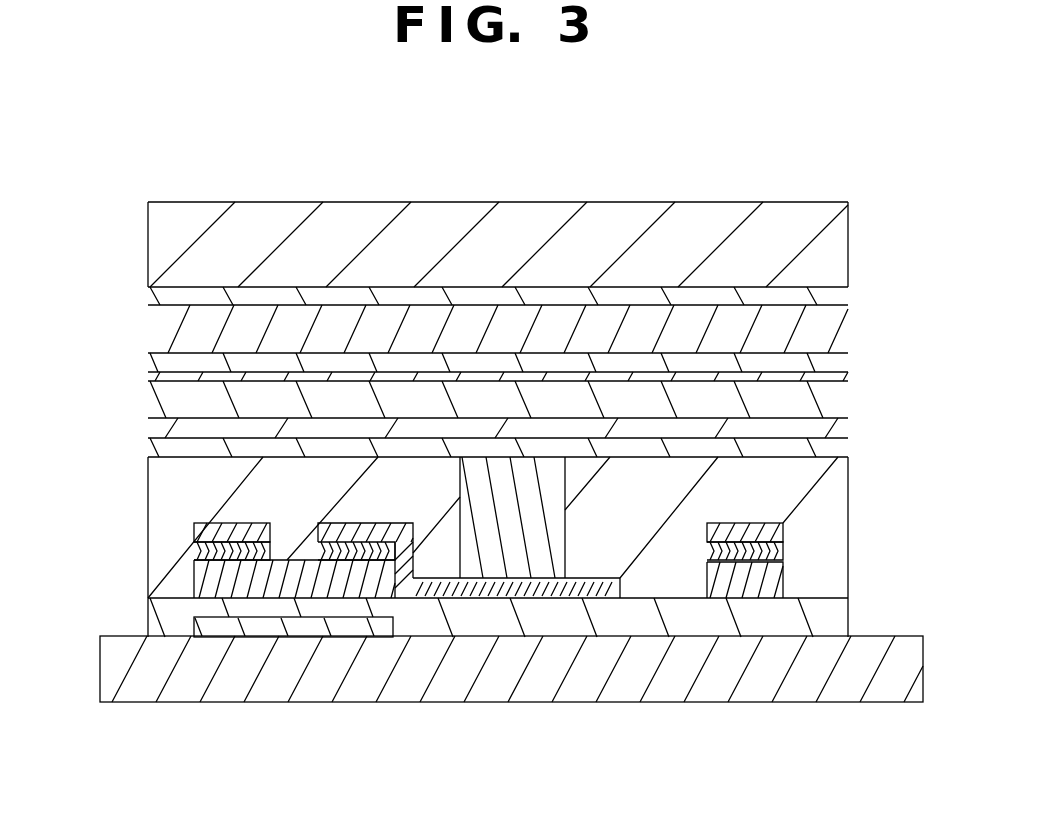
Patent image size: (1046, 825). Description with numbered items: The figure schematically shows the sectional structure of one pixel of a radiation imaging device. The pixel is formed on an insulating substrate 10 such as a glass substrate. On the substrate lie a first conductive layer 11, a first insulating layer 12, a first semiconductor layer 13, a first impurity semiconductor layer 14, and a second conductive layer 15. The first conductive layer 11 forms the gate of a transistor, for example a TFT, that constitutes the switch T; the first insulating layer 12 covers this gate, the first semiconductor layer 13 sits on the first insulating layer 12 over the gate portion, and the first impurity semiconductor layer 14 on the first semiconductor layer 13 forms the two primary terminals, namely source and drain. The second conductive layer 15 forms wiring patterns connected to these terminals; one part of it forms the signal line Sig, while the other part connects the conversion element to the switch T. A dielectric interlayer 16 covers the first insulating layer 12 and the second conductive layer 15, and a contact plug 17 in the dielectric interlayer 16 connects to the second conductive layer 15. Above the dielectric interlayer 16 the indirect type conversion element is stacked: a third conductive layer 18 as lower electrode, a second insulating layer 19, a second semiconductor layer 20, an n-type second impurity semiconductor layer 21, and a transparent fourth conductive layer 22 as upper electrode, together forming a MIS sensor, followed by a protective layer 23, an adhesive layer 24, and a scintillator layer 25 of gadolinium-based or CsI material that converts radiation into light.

The insulating substrate 10 is at (883, 698).
The first conductive layer 11 is at (393, 623).
The first insulating layer 12 is at (178, 620).
The first semiconductor layer 13 is at (205, 590).
The first impurity semiconductor layer 14 is at (193, 548).
The second conductive layer 15 is at (193, 536).
The dielectric interlayer 16 is at (162, 485).
The contact plug 17 is at (511, 568).
The third conductive layer 18 is at (843, 448).
The second insulating layer 19 is at (843, 427).
The second semiconductor layer 20 is at (843, 400).
The second impurity semiconductor layer 21 is at (838, 377).
The fourth conductive layer 22 is at (843, 361).
The protective layer 23 is at (160, 332).
The adhesive layer 24 is at (160, 298).
The scintillator layer 25 is at (254, 215).
The switch T is at (393, 640).
The signal line Sig is at (101, 519).